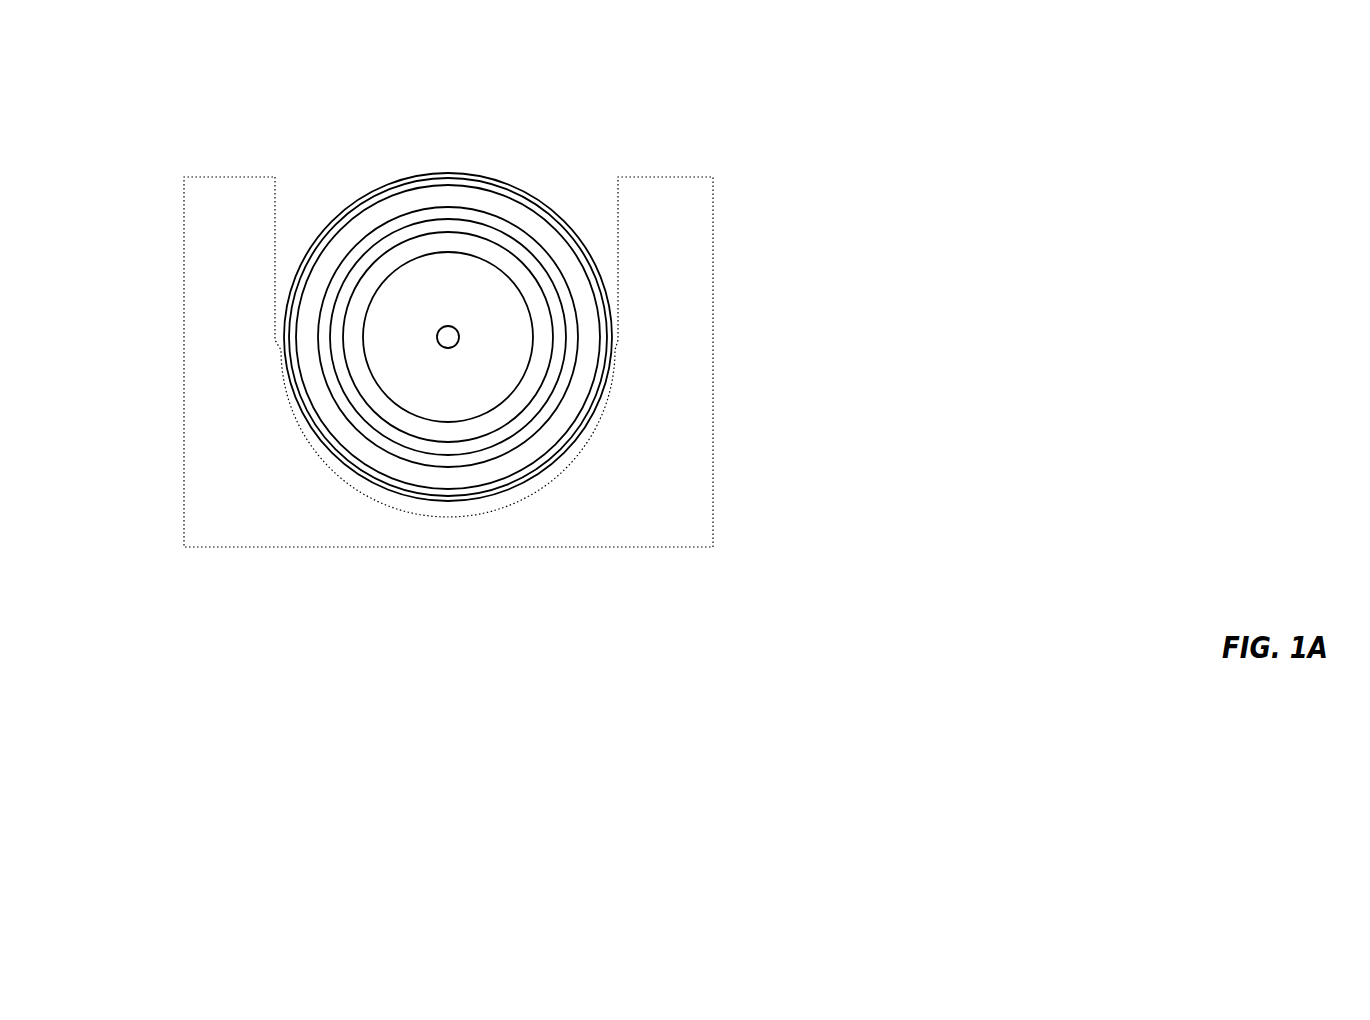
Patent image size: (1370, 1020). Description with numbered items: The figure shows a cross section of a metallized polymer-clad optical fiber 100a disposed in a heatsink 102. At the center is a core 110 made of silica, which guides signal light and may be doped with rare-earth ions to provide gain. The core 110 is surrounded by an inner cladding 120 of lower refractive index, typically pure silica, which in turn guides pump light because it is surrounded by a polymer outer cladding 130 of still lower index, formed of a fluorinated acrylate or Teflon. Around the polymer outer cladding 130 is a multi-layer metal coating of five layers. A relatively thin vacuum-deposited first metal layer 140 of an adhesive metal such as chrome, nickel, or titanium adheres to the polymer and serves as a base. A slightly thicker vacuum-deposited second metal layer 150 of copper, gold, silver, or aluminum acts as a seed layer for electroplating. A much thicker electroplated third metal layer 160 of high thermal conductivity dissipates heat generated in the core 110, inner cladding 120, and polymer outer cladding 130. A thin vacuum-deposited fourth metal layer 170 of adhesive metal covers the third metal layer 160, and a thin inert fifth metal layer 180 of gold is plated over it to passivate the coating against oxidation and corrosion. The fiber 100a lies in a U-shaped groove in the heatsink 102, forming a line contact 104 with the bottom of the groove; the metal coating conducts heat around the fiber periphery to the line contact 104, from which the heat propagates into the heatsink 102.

The metallized polymer-clad optical fiber 100a is at (313, 188).
The heatsink 102 is at (693, 535).
The line contact 104 is at (447, 502).
The core 110 is at (459, 339).
The inner cladding 120 is at (485, 370).
The polymer outer cladding 130 is at (537, 327).
The first metal layer 140 is at (522, 257).
The second metal layer 150 is at (488, 218).
The third metal layer 160 is at (448, 195).
The fourth metal layer 170 is at (468, 503).
The fifth metal layer 180 is at (342, 463).